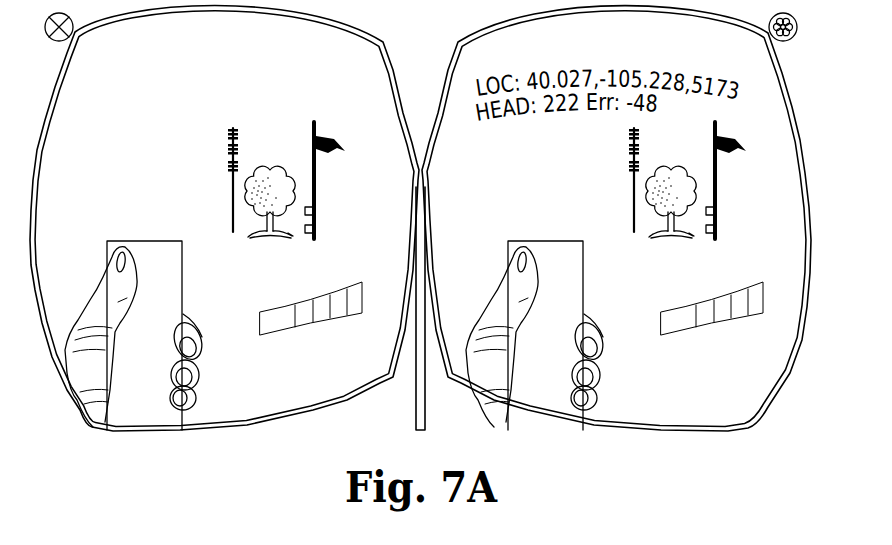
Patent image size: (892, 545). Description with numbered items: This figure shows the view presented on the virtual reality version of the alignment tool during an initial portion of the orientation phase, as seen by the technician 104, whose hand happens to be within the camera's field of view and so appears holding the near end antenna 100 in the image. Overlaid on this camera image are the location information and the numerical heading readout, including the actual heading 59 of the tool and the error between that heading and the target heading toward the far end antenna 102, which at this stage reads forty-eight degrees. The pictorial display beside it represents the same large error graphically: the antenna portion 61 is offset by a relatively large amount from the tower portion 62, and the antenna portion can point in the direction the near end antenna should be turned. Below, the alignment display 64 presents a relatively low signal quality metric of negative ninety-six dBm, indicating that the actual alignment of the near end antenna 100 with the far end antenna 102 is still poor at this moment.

The actual heading 59 is at (176, 128).
The far end antenna 102 is at (226, 148).
The antenna portion 61 is at (338, 142).
The tower portion 62 is at (318, 197).
The near end antenna 100 is at (159, 348).
The technician 104 is at (83, 322).
The alignment display 64 is at (294, 350).